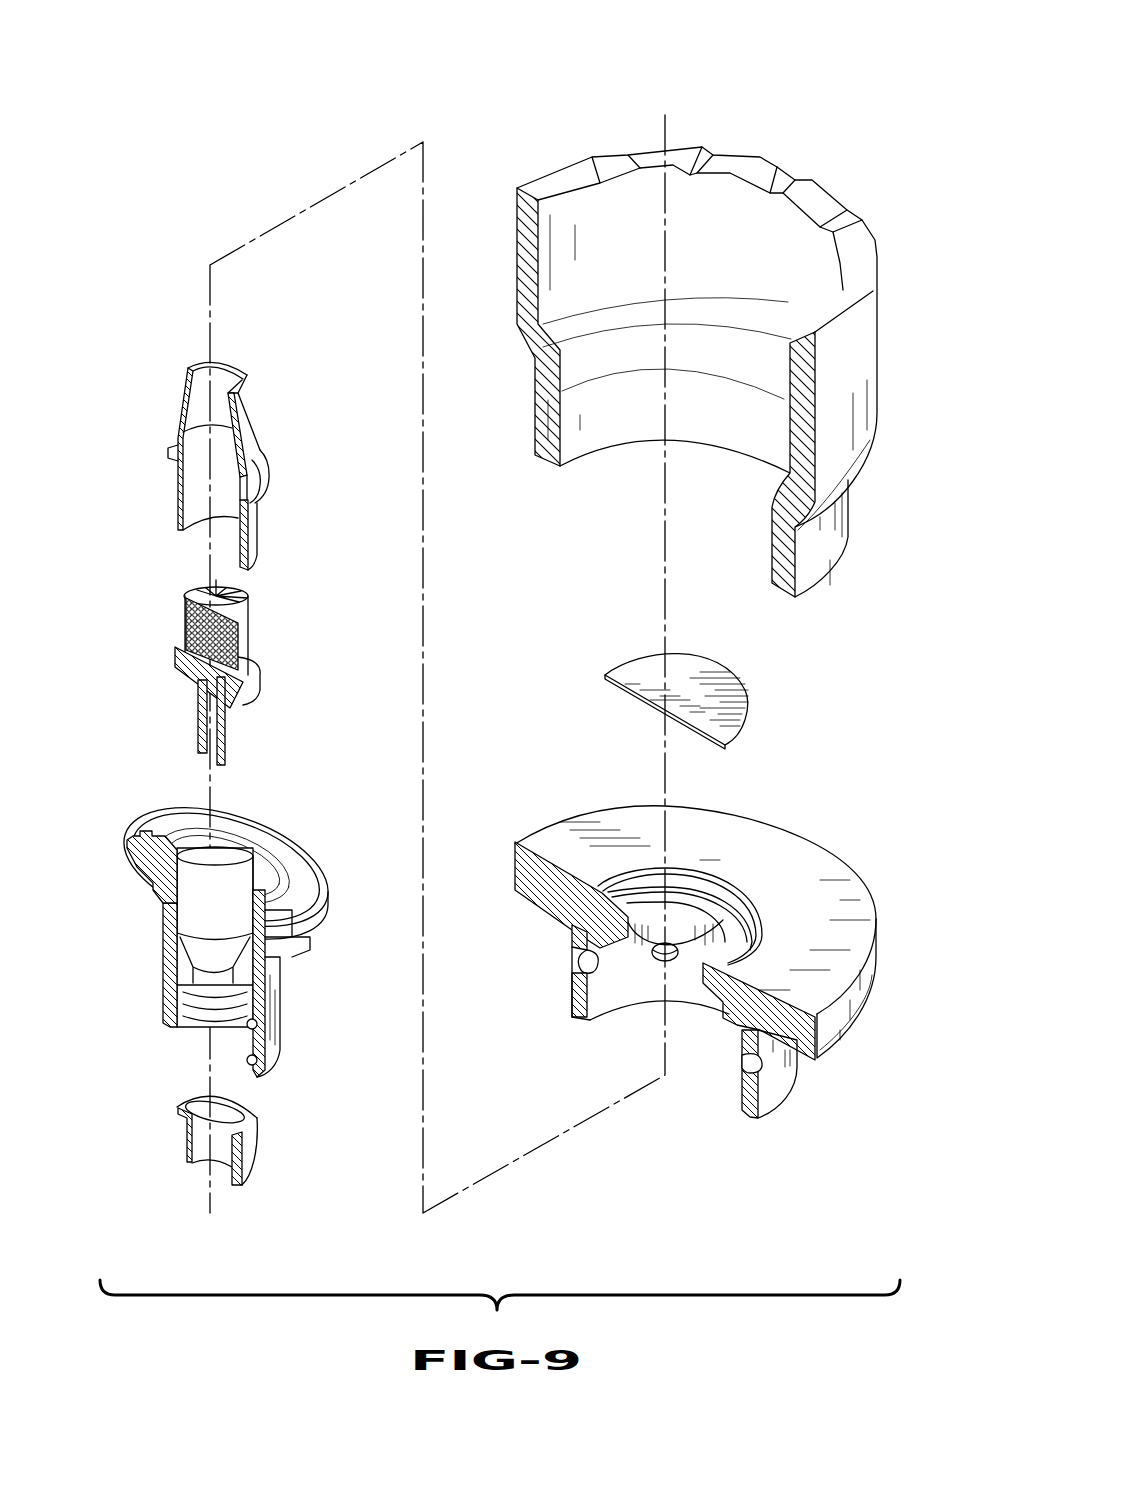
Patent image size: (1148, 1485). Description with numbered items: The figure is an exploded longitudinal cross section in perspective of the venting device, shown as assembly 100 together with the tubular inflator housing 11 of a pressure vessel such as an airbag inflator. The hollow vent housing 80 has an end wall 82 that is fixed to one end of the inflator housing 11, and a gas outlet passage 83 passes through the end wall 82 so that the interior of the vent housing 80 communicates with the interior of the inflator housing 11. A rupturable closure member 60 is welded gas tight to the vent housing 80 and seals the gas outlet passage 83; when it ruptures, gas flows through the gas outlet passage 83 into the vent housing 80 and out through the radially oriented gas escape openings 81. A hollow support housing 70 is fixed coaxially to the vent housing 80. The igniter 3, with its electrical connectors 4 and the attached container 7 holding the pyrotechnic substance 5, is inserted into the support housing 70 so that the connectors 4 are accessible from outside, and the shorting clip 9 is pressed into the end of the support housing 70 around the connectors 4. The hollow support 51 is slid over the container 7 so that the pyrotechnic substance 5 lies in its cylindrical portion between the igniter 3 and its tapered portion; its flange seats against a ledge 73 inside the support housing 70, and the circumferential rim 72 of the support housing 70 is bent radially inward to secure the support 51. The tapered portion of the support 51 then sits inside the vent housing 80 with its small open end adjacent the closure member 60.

The connector assembly 100 is at (142, 161).
The tubular inflator housing 11 is at (750, 227).
The hollow support 51 is at (252, 392).
The container 7 is at (244, 634).
The pyrotechnic substance 5 is at (187, 617).
The igniter 3 is at (255, 668).
The electrical connectors 4 is at (205, 737).
The hollow support housing 70 is at (268, 1007).
The circumferential rim 72 is at (270, 844).
The ledge 73 is at (190, 843).
The shorting clip 9 is at (249, 1147).
The rupturable closure member 60 is at (642, 673).
The hollow vent housing 80 is at (588, 812).
The gas escape opening 81 is at (660, 957).
The end wall 82 is at (817, 860).
The gas outlet passage 83 is at (683, 920).